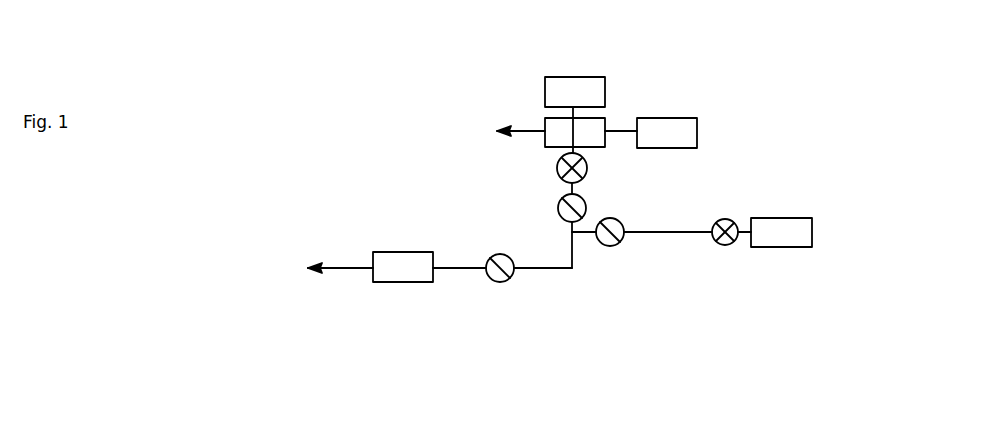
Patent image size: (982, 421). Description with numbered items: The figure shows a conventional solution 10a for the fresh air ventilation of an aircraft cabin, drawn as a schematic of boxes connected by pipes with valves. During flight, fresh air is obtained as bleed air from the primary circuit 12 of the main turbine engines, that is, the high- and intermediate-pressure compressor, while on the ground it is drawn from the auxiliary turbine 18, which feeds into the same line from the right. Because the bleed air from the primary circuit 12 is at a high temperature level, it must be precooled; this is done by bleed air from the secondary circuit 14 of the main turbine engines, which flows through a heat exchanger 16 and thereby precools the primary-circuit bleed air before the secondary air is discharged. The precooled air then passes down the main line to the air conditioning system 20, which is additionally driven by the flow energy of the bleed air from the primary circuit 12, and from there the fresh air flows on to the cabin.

The conventional solution 10a is at (585, 307).
The primary circuit 12 is at (605, 82).
The secondary circuit 14 is at (697, 135).
The heat exchanger 16 is at (545, 147).
The auxiliary turbine 18 is at (783, 249).
The air conditioning system 20 is at (397, 283).